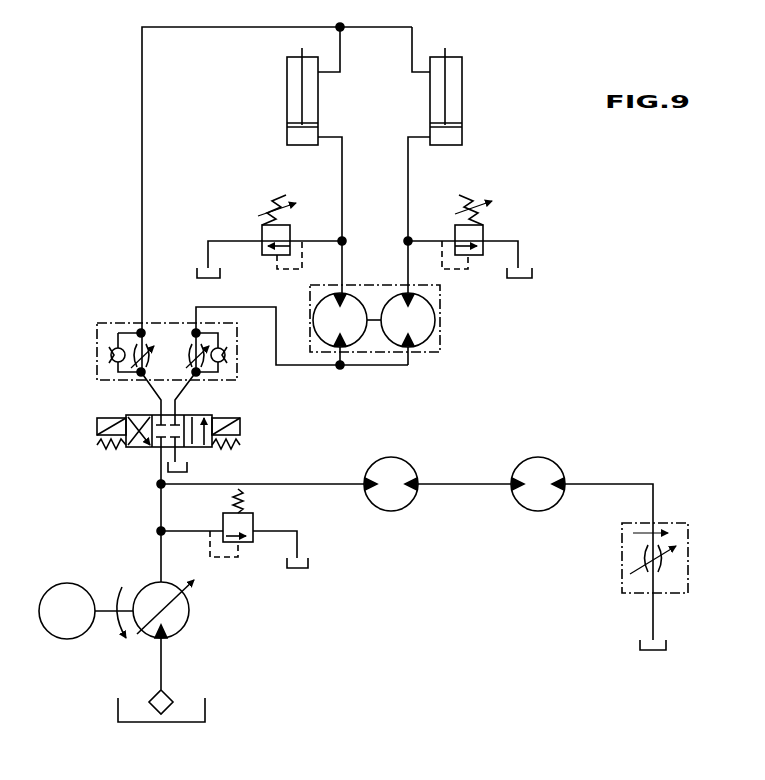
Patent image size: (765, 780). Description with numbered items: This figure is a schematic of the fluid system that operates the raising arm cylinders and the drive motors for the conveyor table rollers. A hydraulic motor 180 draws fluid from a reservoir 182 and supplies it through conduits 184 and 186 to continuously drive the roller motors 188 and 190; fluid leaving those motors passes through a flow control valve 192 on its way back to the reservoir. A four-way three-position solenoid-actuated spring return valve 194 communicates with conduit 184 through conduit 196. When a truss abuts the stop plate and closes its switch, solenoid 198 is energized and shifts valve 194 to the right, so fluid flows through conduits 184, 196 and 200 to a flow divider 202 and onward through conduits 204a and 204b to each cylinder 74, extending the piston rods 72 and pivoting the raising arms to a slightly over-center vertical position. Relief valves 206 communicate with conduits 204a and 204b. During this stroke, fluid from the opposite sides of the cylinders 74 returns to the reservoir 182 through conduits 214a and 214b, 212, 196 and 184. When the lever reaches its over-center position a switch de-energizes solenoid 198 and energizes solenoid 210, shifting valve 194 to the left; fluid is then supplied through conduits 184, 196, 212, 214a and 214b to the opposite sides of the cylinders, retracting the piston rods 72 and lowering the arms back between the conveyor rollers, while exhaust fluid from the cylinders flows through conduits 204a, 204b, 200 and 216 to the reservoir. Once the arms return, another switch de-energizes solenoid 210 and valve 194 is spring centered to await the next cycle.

The piston rod 72 is at (302, 85).
The fluid actuated cylinder 74 is at (287, 140).
The hydraulic motor 180 is at (158, 582).
The reservoir 182 is at (205, 706).
The conduit 184 is at (161, 516).
The conduit 186 is at (345, 484).
The roller motor 188 is at (410, 458).
The roller motor 190 is at (525, 458).
The flow control valve 192 is at (622, 545).
The four-way three-position solenoid-actuated spring return valve 194 is at (126, 416).
The conduit 196 is at (161, 465).
The solenoid 198 is at (97, 433).
The conduit 200 is at (279, 368).
The flow divider 202 is at (442, 295).
The conduit 204a is at (340, 190).
The conduit 204b is at (406, 190).
The relief valve 206 is at (262, 228).
The solenoid 210 is at (228, 418).
The conduit 212 is at (142, 80).
The conduit 214a is at (340, 48).
The conduit 214b is at (408, 73).
The conduit 216 is at (189, 462).